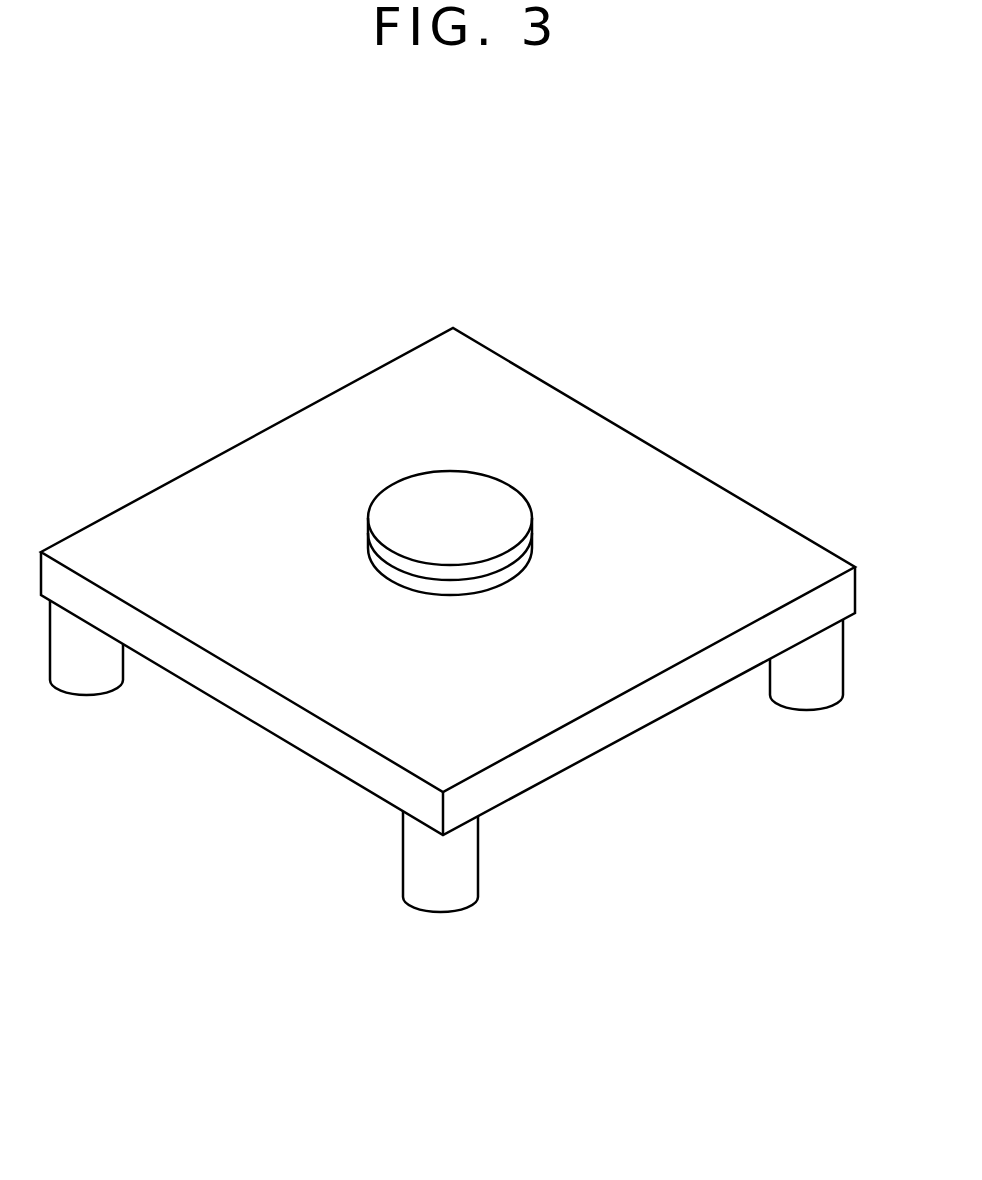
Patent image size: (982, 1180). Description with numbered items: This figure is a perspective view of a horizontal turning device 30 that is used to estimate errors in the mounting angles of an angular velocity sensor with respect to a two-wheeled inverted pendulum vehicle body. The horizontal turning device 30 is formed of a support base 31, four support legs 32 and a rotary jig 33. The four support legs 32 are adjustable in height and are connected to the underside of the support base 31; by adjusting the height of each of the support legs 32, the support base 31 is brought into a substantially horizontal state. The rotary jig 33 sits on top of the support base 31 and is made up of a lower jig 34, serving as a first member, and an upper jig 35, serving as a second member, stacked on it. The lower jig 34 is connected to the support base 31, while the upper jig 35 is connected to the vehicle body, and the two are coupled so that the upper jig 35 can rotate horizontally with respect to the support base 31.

The horizontal turning device 30 is at (693, 192).
The support base 31 is at (793, 545).
The support legs 32 is at (83, 685).
The rotary jig 33 is at (533, 533).
The lower jig 34 is at (520, 568).
The upper jig 35 is at (527, 545).